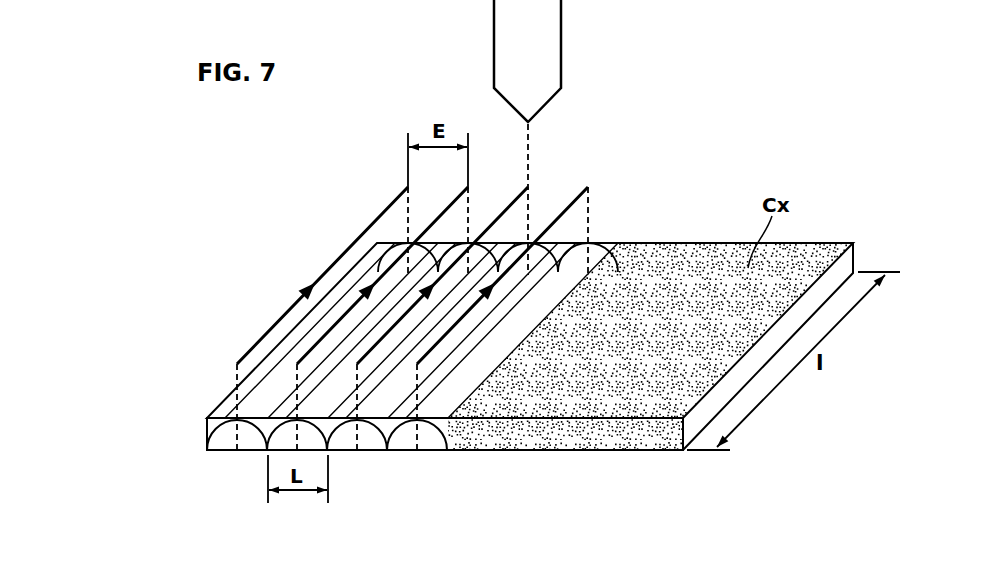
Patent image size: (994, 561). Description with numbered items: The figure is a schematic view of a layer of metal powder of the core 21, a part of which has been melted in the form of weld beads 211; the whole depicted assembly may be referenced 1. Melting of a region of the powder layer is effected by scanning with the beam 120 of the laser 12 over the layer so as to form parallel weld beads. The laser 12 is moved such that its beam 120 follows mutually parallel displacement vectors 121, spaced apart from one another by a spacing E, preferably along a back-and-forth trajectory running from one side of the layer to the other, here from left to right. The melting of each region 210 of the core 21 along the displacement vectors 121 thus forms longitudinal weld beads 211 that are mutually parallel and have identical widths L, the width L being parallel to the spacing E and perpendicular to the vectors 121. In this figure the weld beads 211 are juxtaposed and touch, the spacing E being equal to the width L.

The additive manufacturing assembly 1 is at (458, 382).
The laser 12 is at (541, 50).
The laser beam 120 is at (530, 158).
The displacement vectors 121 is at (352, 248).
The core 21 is at (181, 460).
The region of core 210 is at (279, 291).
The weld beads 211 is at (223, 440).